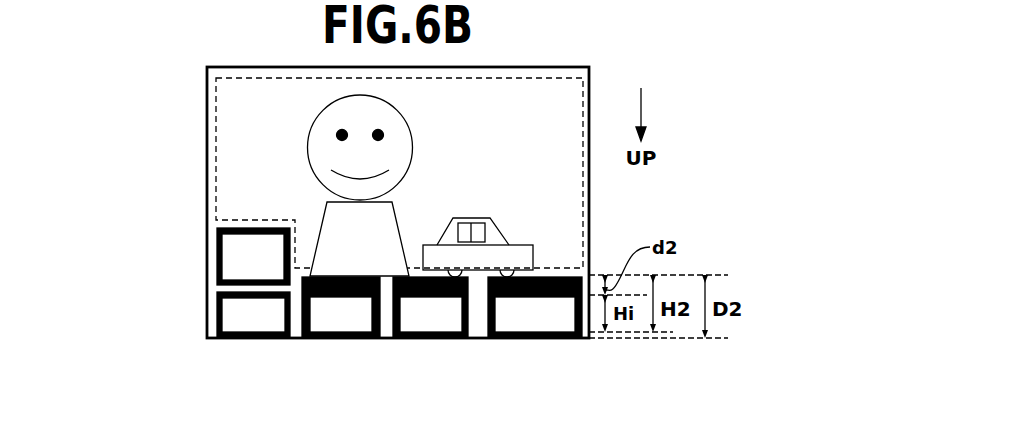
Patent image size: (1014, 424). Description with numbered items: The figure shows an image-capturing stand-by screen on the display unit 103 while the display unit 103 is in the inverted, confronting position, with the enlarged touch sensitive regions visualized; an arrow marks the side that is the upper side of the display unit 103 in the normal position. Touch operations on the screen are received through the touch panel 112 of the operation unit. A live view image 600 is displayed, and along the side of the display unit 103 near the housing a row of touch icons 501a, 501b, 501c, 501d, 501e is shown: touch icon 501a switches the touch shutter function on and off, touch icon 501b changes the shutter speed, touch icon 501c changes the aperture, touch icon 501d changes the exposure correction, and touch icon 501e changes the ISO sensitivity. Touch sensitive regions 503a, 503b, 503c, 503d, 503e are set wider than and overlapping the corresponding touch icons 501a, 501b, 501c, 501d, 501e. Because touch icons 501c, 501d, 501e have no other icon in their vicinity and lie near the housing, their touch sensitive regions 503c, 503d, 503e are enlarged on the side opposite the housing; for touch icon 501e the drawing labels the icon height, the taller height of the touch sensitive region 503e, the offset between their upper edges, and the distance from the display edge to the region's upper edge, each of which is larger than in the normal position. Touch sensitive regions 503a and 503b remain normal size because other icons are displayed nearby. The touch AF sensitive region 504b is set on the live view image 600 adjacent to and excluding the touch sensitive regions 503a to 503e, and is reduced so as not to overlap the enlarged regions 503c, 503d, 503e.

The display unit 103 is at (327, 202).
The touch panel 112 is at (207, 90).
The touch AF sensitive region 504b is at (583, 188).
The live view image 600 is at (228, 147).
The touch icon 501a is at (223, 266).
The touch icon 501b is at (225, 338).
The touch icon 501c is at (362, 338).
The touch icon 501d is at (452, 338).
The touch icon 501e is at (558, 338).
The touch sensitive region 503a is at (218, 236).
The touch sensitive region 503b is at (217, 298).
The touch sensitive region 503c is at (313, 338).
The touch sensitive region 503d is at (403, 338).
The touch sensitive region 503e is at (505, 338).